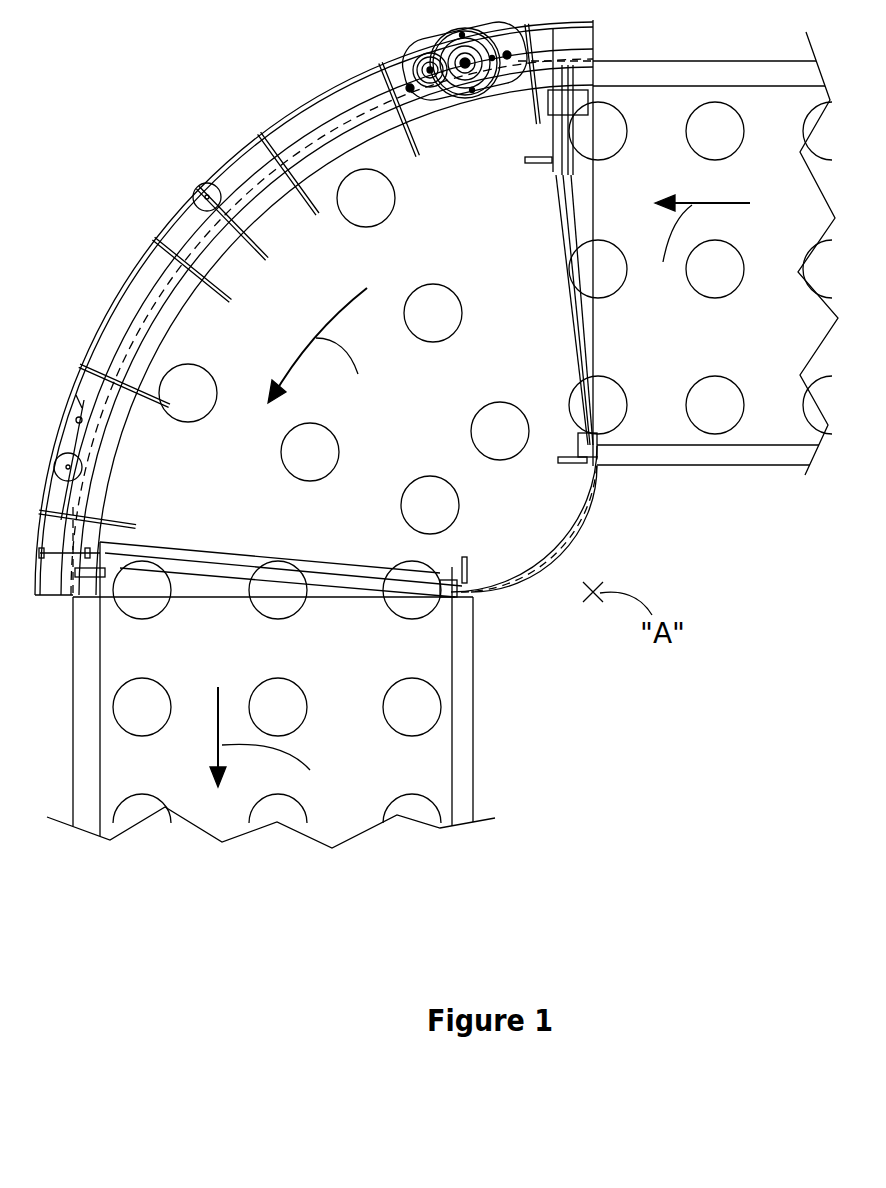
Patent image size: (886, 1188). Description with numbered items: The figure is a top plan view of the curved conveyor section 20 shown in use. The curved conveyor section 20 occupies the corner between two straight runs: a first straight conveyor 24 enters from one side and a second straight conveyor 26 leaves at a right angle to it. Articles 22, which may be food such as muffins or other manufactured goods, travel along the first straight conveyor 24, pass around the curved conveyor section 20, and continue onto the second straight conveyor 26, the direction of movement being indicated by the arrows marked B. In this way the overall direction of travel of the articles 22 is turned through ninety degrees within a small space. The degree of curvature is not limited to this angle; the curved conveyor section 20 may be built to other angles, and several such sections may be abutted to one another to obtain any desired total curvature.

The curved conveyor section 20 is at (345, 307).
The articles 22 is at (383, 200).
The first straight conveyor 24 is at (742, 522).
The second straight conveyor 26 is at (520, 722).